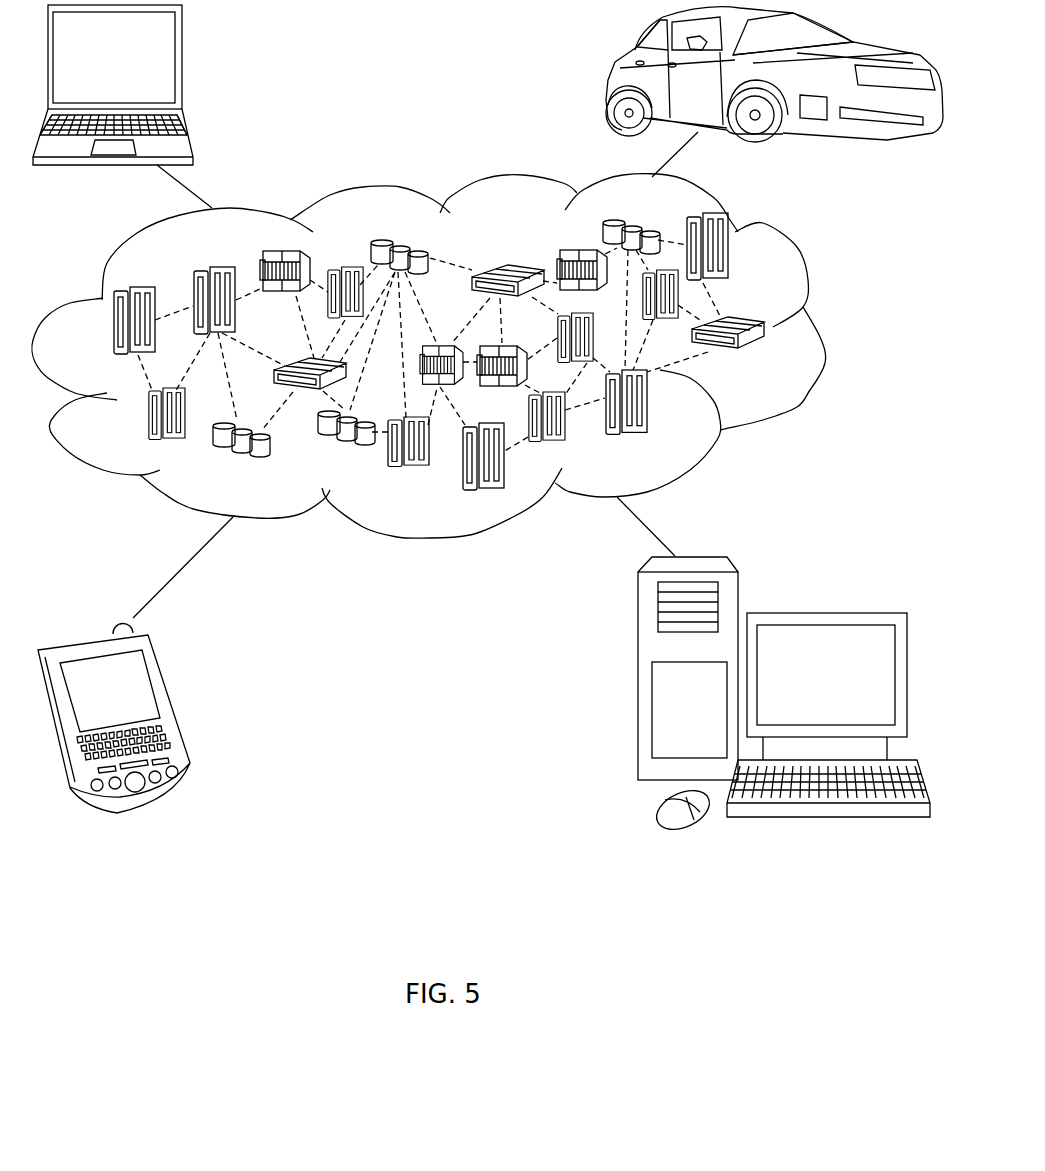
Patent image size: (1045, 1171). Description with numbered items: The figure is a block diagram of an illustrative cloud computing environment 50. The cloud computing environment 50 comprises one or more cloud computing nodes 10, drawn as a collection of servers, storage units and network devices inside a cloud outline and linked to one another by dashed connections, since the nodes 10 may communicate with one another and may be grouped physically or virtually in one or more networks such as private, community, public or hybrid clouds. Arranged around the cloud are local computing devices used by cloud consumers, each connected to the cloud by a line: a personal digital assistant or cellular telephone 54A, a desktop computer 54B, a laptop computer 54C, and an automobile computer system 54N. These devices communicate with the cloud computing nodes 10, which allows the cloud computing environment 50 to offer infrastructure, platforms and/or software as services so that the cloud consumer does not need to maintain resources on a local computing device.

The cloud computing node 10 is at (763, 361).
The cloud computing environment 50 is at (822, 337).
The personal digital assistant or cellular telephone 54A is at (172, 706).
The desktop computer 54B is at (823, 613).
The laptop computer 54C is at (183, 62).
The automobile computer system 54N is at (608, 80).